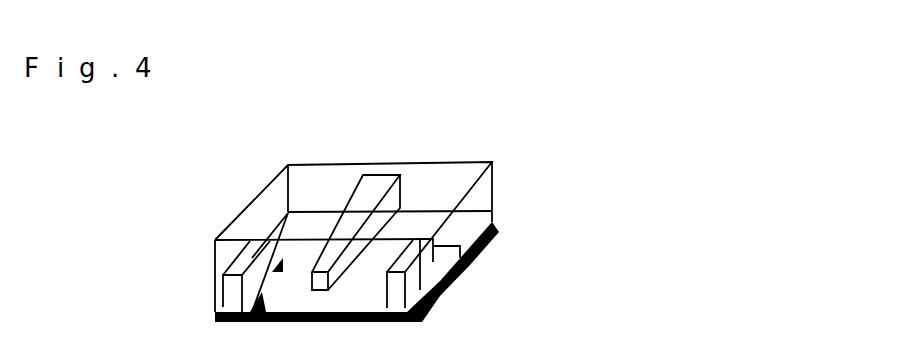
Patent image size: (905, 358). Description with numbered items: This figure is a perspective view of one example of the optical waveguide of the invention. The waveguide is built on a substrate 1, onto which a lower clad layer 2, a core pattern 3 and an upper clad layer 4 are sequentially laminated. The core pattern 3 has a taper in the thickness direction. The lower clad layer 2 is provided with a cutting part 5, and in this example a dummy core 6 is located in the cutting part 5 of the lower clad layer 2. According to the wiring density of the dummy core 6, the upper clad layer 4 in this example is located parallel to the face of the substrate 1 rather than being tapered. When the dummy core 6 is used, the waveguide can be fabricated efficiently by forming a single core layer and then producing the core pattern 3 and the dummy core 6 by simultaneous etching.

The substrate 1 is at (478, 252).
The lower clad layer 2 is at (460, 227).
The core pattern 3 is at (382, 182).
The upper clad layer 4 is at (246, 222).
The cutting part 5 is at (447, 296).
The dummy core 6 is at (235, 302).